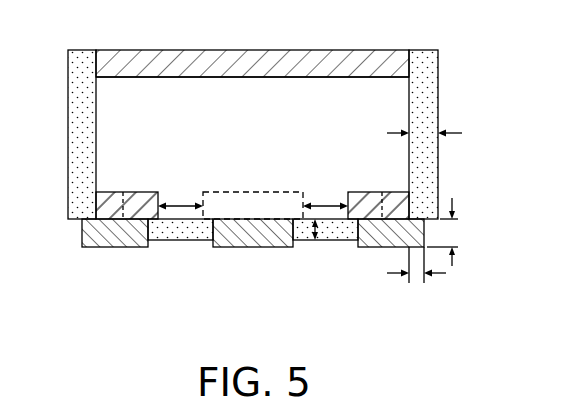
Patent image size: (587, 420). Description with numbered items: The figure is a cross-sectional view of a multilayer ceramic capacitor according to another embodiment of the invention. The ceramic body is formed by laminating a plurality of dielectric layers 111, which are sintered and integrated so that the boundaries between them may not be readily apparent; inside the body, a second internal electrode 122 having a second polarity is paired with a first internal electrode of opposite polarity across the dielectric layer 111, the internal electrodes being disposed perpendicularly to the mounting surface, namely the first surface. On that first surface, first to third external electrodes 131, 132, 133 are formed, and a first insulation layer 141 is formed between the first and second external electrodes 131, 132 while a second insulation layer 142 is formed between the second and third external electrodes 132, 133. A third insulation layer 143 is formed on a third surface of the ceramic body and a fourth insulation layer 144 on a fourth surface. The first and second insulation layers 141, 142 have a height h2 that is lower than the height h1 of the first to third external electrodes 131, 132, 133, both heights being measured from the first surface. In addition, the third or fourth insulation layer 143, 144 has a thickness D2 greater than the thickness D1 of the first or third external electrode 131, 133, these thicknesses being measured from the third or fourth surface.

The dielectric layer 111 is at (306, 62).
The second internal electrode 122 is at (200, 88).
The third insulation layer 143 is at (83, 60).
The fourth insulation layer 144 is at (424, 62).
The first external electrode 131 is at (108, 245).
The second external electrode 132 is at (247, 236).
The third external electrode 133 is at (388, 238).
The first insulation layer 141 is at (183, 236).
The second insulation layer 142 is at (328, 236).
The height of external electrodes h1 is at (455, 232).
The height of insulation layers h2 is at (309, 230).
The thickness of external electrode D1 is at (416, 274).
The thickness of insulation layer D2 is at (424, 133).